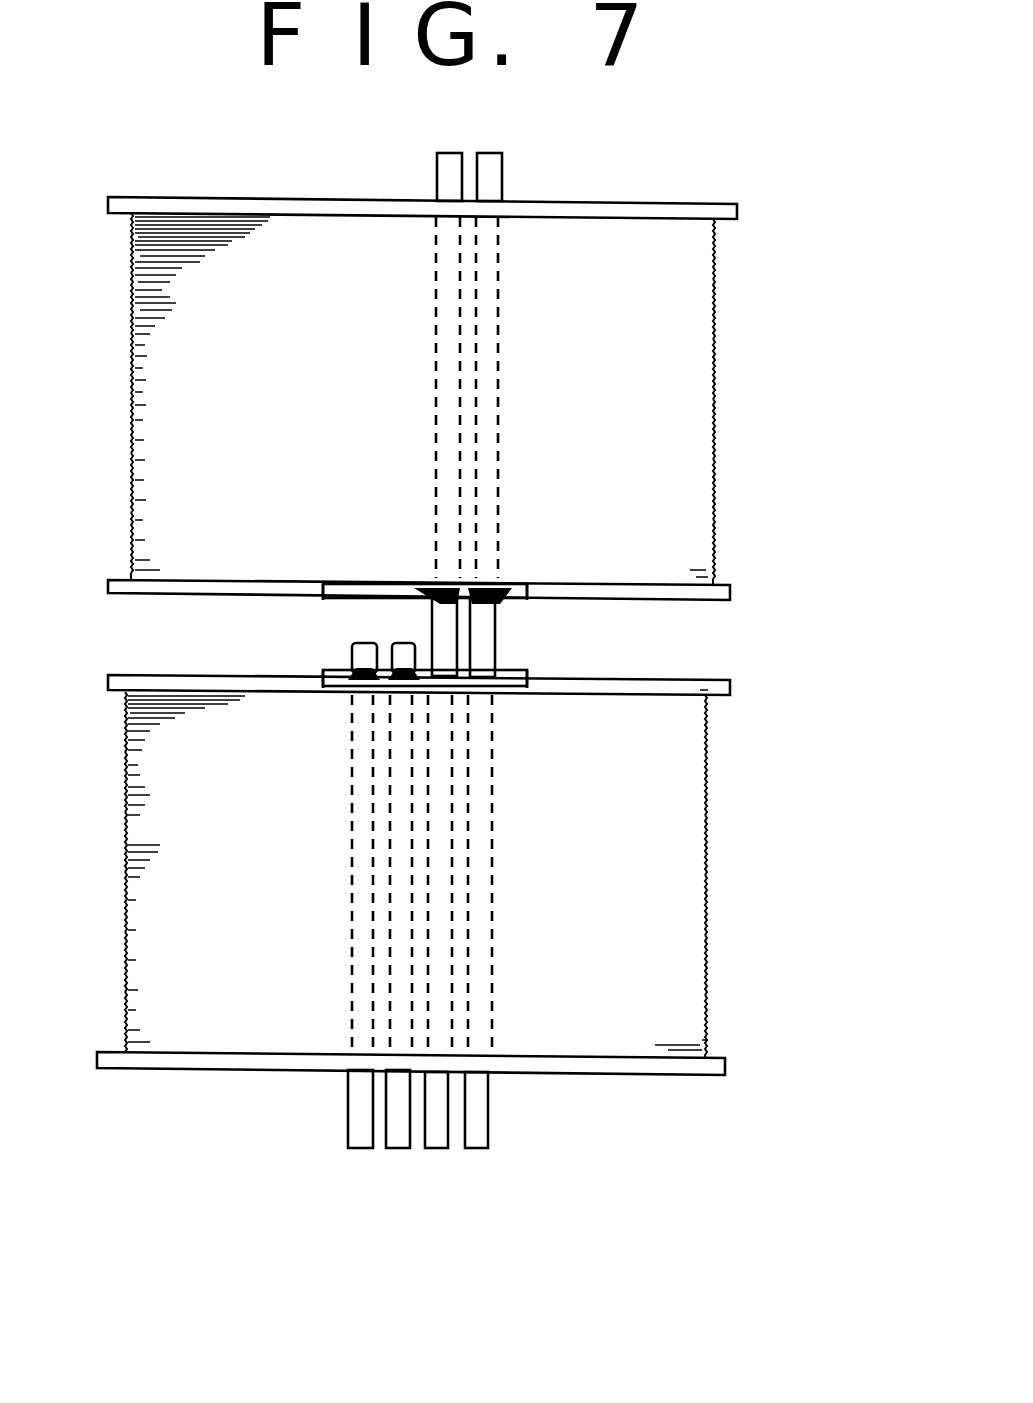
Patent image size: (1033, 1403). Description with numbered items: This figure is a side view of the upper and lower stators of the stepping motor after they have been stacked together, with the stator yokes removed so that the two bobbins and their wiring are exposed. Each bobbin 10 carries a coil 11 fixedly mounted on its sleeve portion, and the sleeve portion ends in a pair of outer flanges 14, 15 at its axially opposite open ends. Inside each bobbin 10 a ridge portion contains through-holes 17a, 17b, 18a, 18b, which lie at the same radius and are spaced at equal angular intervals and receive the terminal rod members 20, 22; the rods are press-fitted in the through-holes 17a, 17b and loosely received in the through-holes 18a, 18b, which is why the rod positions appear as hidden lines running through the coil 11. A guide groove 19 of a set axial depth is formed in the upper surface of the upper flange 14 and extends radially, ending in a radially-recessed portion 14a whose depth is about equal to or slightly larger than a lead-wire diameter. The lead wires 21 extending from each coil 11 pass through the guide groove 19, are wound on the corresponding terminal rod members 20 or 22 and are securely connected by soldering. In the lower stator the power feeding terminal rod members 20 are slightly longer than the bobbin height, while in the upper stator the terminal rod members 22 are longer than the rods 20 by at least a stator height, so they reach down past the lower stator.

The bobbin 10 is at (152, 195).
The coil 11 is at (718, 387).
The upper flange 14 is at (712, 600).
The radially-recessed portion 14a is at (353, 582).
The outer flange 15 is at (700, 206).
The through-hole 17a is at (500, 298).
The through-hole 17b is at (437, 299).
The through-hole 18a is at (452, 942).
The through-hole 18b is at (491, 902).
The guide groove 19 is at (330, 598).
The terminal rod member 20 is at (357, 1103).
The lead wire 21 is at (413, 582).
The terminal rod member 22 is at (480, 1120).